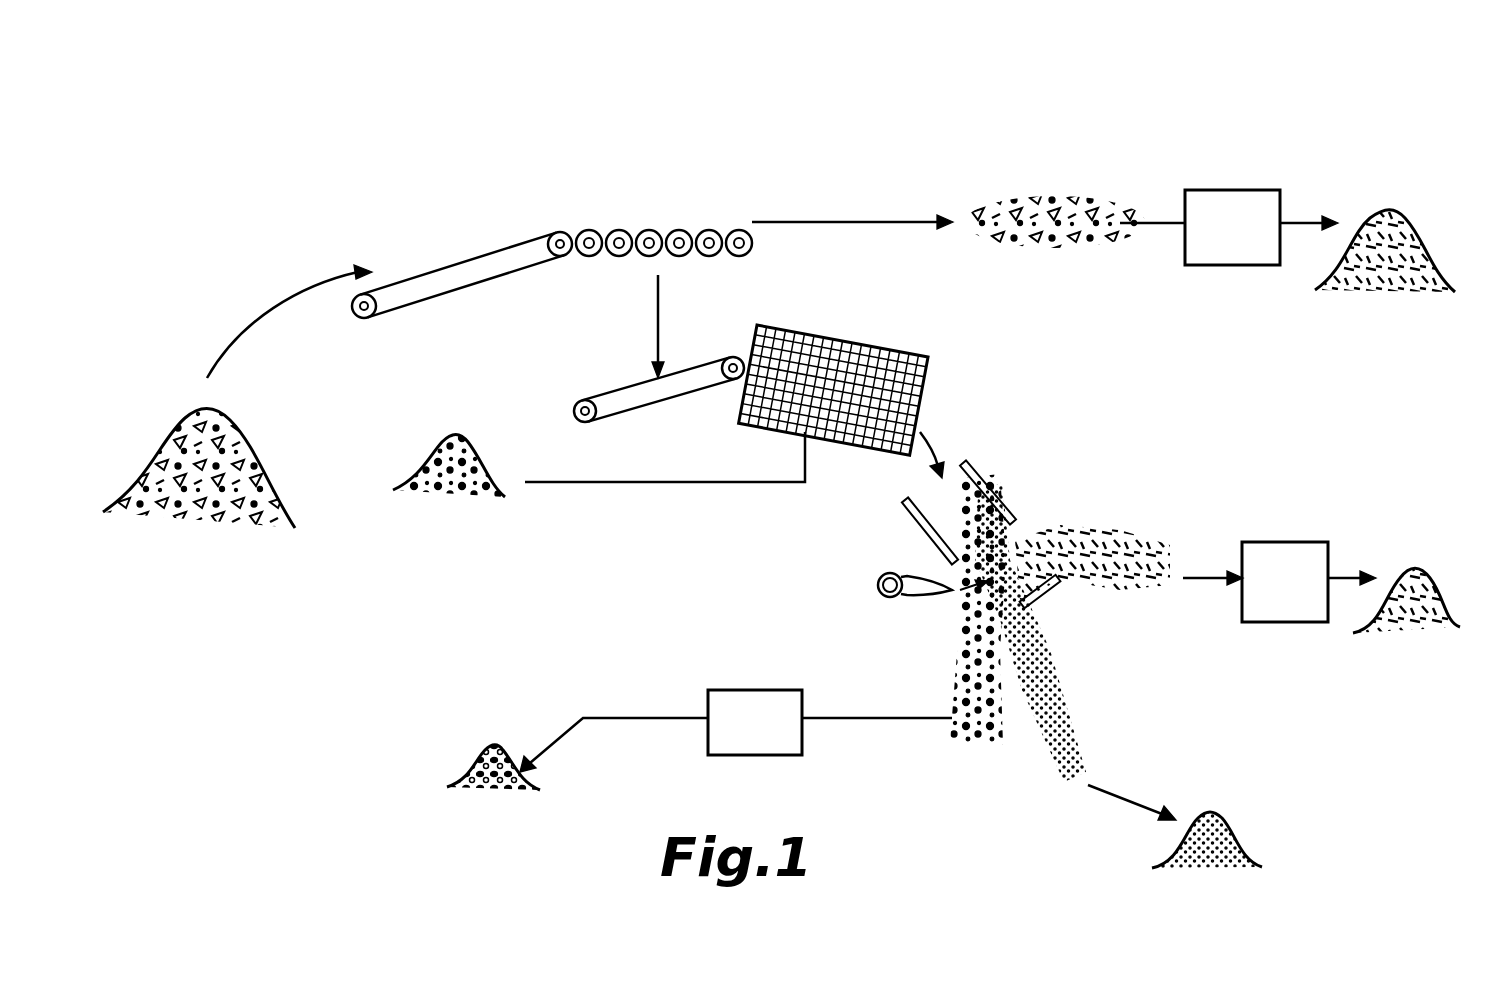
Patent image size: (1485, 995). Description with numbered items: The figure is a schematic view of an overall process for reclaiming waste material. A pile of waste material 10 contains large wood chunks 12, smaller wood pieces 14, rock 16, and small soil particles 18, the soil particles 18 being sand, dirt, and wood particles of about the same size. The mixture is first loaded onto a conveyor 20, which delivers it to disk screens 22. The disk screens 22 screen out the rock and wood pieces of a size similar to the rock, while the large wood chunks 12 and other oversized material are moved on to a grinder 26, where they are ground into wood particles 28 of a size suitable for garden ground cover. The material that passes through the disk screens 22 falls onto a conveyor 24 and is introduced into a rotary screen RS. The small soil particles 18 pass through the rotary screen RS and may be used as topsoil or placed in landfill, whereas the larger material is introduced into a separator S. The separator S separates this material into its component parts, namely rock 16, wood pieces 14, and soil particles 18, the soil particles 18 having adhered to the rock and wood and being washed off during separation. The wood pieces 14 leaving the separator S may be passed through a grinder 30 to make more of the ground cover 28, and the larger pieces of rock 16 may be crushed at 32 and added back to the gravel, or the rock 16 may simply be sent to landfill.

The pile of waste material 10 is at (180, 440).
The large wood chunks 12 is at (1055, 200).
The smaller wood pieces 14 is at (1105, 535).
The rock 16 is at (975, 637).
The small soil particles 18 is at (425, 455).
The conveyor 20 is at (462, 262).
The disk screens 22 is at (705, 235).
The conveyor 24 is at (618, 392).
The rotary screen RS is at (908, 350).
The separator S is at (925, 528).
The grinder 26 is at (1235, 198).
The wood particles 28 is at (1417, 566).
The grinder 30 is at (1280, 540).
The crusher 32 is at (742, 690).